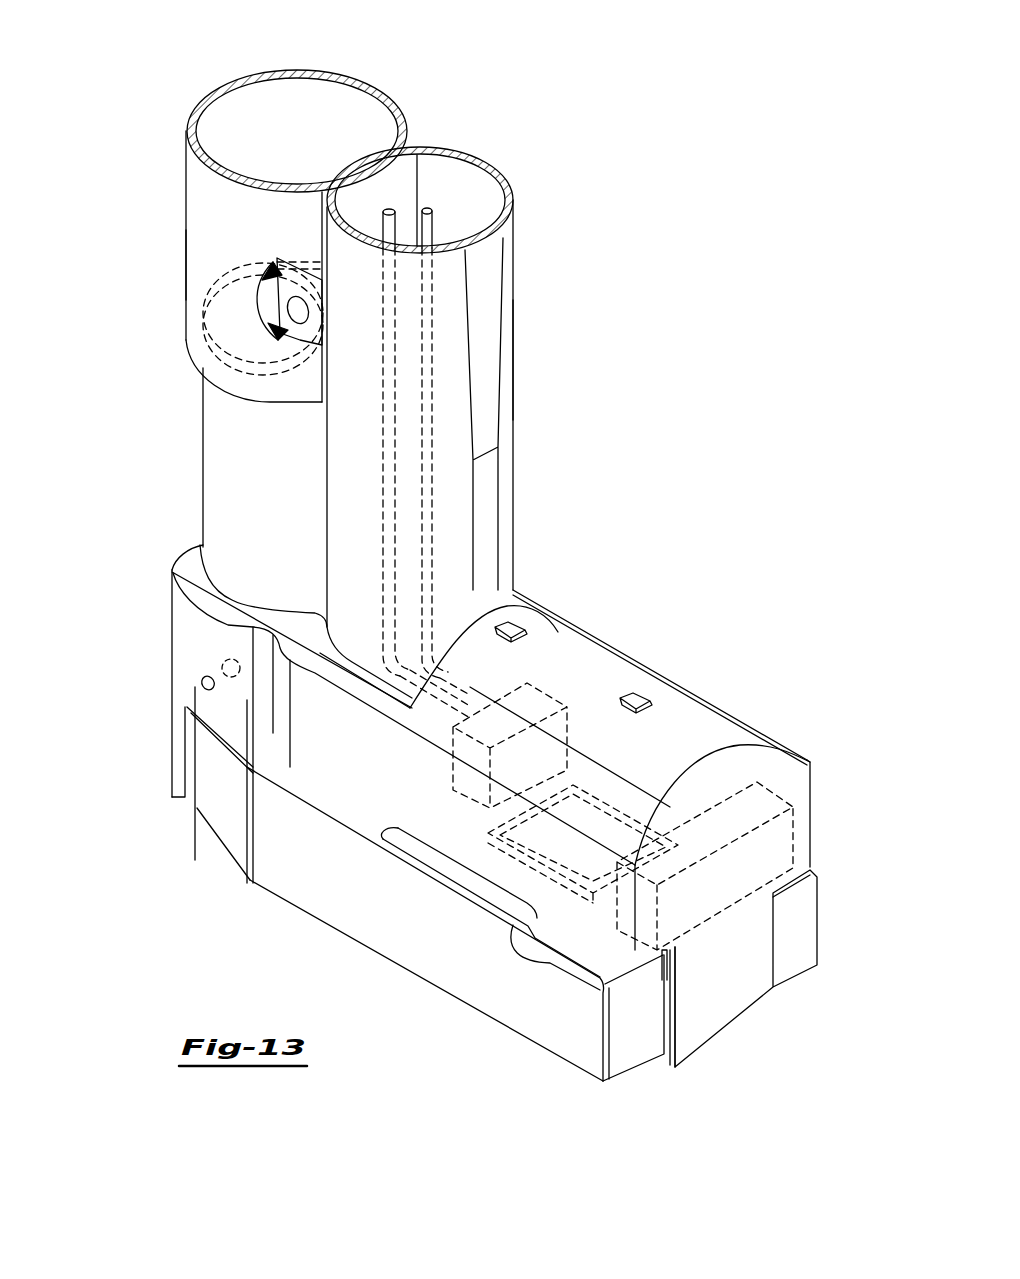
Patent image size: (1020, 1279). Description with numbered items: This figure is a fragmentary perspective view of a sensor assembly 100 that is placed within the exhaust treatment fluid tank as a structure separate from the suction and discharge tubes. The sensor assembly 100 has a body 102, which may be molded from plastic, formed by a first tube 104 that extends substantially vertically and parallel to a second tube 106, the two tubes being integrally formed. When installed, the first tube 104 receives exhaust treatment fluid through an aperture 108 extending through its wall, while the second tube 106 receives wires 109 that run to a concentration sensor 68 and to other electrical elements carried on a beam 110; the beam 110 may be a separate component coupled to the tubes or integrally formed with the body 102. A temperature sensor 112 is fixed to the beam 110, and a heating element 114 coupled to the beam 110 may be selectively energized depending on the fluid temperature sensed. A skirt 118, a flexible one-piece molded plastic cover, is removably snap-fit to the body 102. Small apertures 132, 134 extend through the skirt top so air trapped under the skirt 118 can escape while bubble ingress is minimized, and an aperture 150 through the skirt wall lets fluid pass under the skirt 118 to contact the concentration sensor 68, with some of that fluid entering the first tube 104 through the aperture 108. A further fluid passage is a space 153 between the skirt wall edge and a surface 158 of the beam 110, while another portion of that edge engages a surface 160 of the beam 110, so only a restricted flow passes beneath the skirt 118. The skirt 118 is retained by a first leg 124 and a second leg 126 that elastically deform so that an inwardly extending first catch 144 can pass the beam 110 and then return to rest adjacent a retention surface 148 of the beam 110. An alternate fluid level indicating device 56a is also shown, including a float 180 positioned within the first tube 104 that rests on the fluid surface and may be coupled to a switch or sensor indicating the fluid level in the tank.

The sensor assembly 100 is at (586, 247).
The body 102 is at (516, 376).
The first tube 104 is at (243, 77).
The second tube 106 is at (460, 150).
The wires 109 is at (432, 220).
The fluid level indicating device 56a is at (185, 263).
The float 180 is at (213, 348).
The aperture 108 is at (226, 660).
The aperture 150 is at (202, 686).
The second leg 126 is at (178, 743).
The surface 160 is at (280, 772).
The beam 110 is at (427, 953).
The surface 158 is at (587, 950).
The heating element 114 is at (490, 842).
The concentration sensor 68 is at (540, 688).
The skirt 118 is at (737, 719).
The aperture 132 is at (513, 628).
The aperture 134 is at (635, 698).
The temperature sensor 112 is at (781, 797).
The space 153 is at (635, 960).
The first leg 124 is at (753, 1010).
The retention surface 148 is at (620, 1077).
The first catch 144 is at (667, 1060).